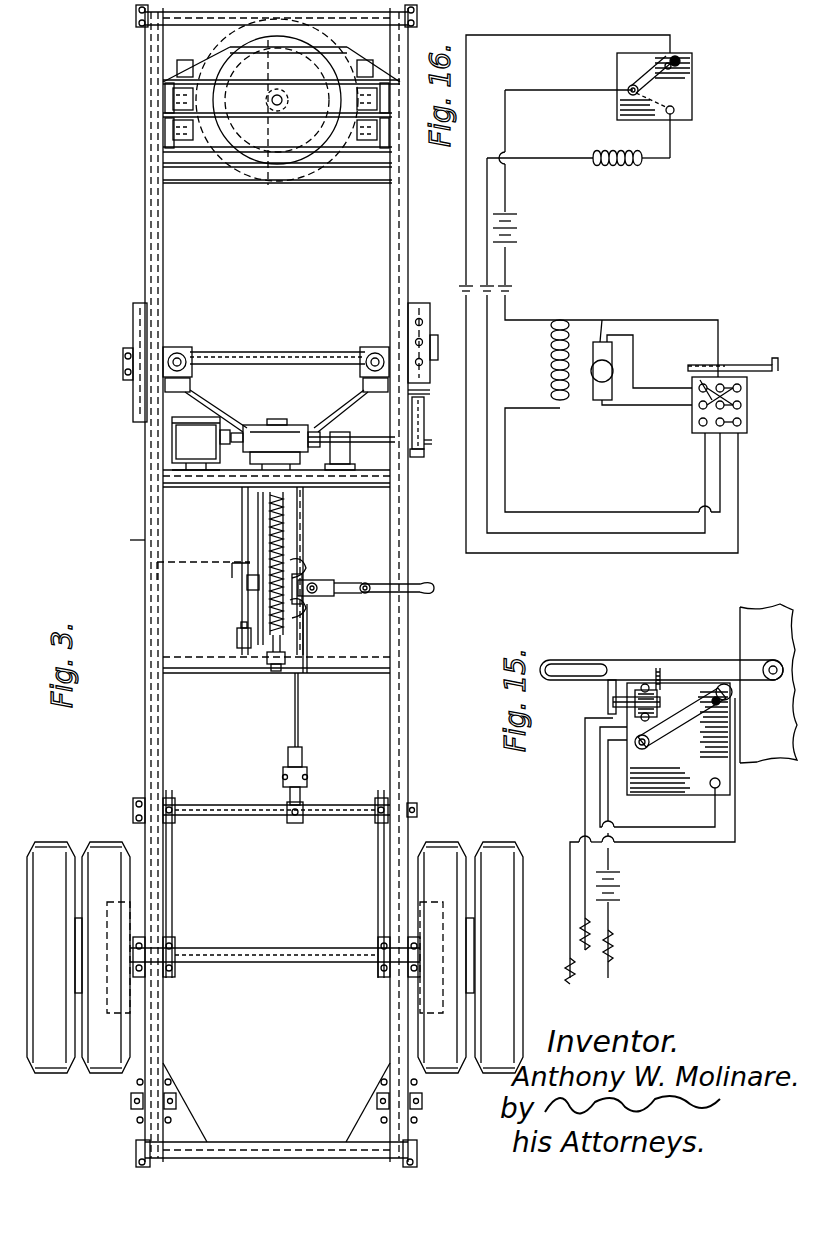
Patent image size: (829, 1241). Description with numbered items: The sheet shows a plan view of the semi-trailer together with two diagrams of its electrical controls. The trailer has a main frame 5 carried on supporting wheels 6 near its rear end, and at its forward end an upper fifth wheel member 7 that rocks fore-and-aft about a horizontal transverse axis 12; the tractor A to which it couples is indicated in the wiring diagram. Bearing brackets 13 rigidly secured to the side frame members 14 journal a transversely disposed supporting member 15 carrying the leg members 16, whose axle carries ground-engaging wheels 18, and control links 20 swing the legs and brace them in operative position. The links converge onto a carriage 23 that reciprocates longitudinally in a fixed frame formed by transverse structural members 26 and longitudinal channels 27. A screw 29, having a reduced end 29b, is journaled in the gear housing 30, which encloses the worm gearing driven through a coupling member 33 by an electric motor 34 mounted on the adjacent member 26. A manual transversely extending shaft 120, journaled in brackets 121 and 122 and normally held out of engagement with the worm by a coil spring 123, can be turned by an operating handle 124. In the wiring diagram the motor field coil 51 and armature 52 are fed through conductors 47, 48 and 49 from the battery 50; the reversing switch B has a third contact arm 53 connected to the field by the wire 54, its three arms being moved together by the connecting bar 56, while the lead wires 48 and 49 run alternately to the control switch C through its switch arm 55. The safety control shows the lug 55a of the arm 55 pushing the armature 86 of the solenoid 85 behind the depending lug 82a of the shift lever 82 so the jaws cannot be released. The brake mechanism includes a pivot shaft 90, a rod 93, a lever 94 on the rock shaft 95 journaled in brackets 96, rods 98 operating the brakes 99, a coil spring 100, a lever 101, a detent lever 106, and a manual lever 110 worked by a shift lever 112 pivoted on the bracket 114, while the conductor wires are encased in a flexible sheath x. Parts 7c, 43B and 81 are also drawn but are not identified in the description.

In FIG. 3, the main frame 5 is at (140, 560).
In FIG. 3, the supporting wheels 6 is at (98, 840).
In FIG. 3, the upper fifth wheel member 7 is at (236, 160).
In FIG. 3, the engine shaft hub 7c is at (266, 172).
In FIG. 3, the horizontal transverse axis 12 is at (170, 100).
In FIG. 3, the bearing brackets 13 is at (383, 347).
In FIG. 3, the side frame members 14 is at (166, 297).
In FIG. 3, the transversely disposed supporting member 15 is at (281, 352).
In FIG. 3, the leg members 16 is at (492, 842).
In FIG. 3, the ground-engaging wheels 18 is at (136, 303).
In FIG. 3, the control links 20 is at (340, 415).
In FIG. 3, the carriage 23 is at (258, 525).
In FIG. 3, the transversely extending structural members 26 is at (350, 487).
In FIG. 3, the longitudinally extending channels 27 is at (306, 520).
In FIG. 3, the screw 29 is at (270, 530).
In FIG. 3, the reduced end of screw 29b is at (244, 650).
In FIG. 3, the gear housing 30 is at (270, 425).
In FIG. 3, the coupling member 33 is at (228, 430).
In FIG. 3, the electric motor 34 is at (186, 440).
In FIG. 3, the traveling nut 43B is at (247, 585).
In FIG. 16, the conductor 47 is at (508, 265).
In FIG. 15, the conductor 47 is at (612, 912).
In FIG. 16, the lead wire 48 is at (487, 245).
In FIG. 15, the lead wire 48 is at (585, 880).
In FIG. 16, the lead wire 49 is at (466, 265).
In FIG. 15, the lead wire 49 is at (570, 905).
In FIG. 16, the battery 50 is at (517, 224).
In FIG. 15, the battery 50 is at (620, 890).
In FIG. 16, the motor field coil 51 is at (548, 372).
In FIG. 16, the armature 52 is at (600, 400).
In FIG. 16, the third contact arm 53 is at (734, 434).
In FIG. 16, the wire 54 is at (646, 512).
In FIG. 16, the switch arm 55 is at (642, 76).
In FIG. 15, the switch arm 55 is at (666, 728).
In FIG. 15, the lug 55a is at (700, 685).
In FIG. 16, the connecting bar 56 is at (740, 365).
In FIG. 15, the adjusting pin 81 is at (662, 666).
In FIG. 15, the shift lever 82 is at (626, 660).
In FIG. 15, the depending lug 82a is at (610, 712).
In FIG. 16, the solenoid 85 is at (617, 162).
In FIG. 15, the solenoid 85 is at (646, 684).
In FIG. 15, the armature 86 is at (613, 699).
In FIG. 3, the pivot shaft 90 is at (305, 592).
In FIG. 3, the rod 93 is at (300, 708).
In FIG. 3, the lever 94 is at (300, 795).
In FIG. 3, the rock shaft 95 is at (358, 805).
In FIG. 3, the brackets 96 is at (382, 798).
In FIG. 3, the rods 98 is at (170, 835).
In FIG. 3, the brakes 99 is at (132, 985).
In FIG. 3, the coil spring 100 is at (305, 575).
In FIG. 3, the lever 101 is at (320, 580).
In FIG. 3, the detent lever 106 is at (310, 620).
In FIG. 3, the lever 110 is at (330, 590).
In FIG. 3, the shift lever 112 is at (350, 583).
In FIG. 3, the bracket 114 is at (405, 594).
In FIG. 3, the transversely extending shaft 120 is at (370, 437).
In FIG. 3, the bracket 121 is at (345, 470).
In FIG. 3, the bracket 122 is at (416, 457).
In FIG. 3, the coil spring 123 is at (432, 444).
In FIG. 3, the operating handle 124 is at (430, 425).
In FIG. 3, the flexible sheath x is at (232, 570).
In FIG. 16, the tractor A is at (605, 320).
In FIG. 16, the reversing switch B is at (700, 380).
In FIG. 16, the control switch C is at (684, 105).
In FIG. 15, the control switch C is at (712, 748).